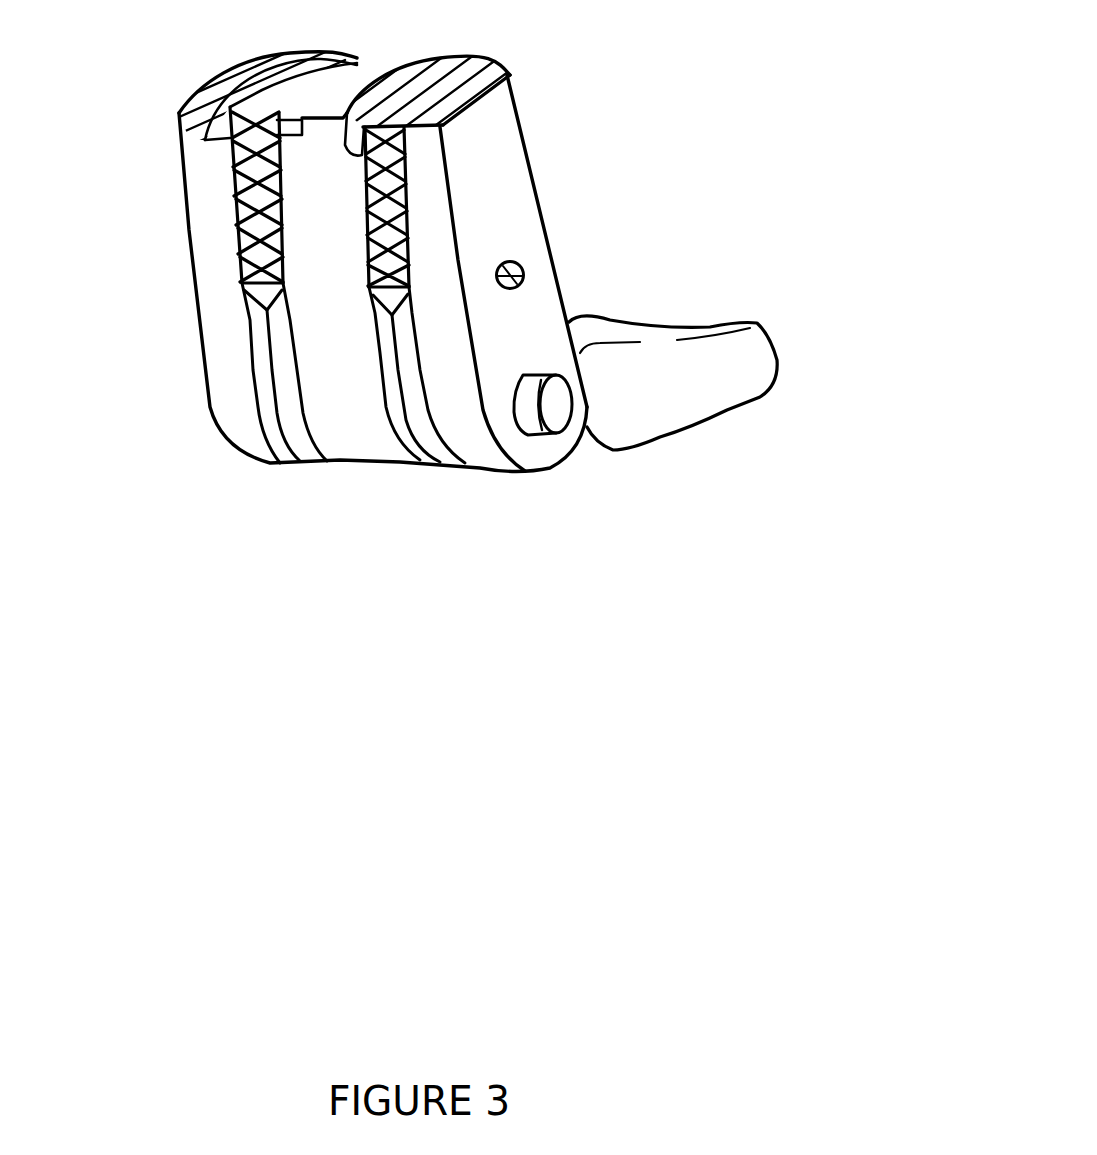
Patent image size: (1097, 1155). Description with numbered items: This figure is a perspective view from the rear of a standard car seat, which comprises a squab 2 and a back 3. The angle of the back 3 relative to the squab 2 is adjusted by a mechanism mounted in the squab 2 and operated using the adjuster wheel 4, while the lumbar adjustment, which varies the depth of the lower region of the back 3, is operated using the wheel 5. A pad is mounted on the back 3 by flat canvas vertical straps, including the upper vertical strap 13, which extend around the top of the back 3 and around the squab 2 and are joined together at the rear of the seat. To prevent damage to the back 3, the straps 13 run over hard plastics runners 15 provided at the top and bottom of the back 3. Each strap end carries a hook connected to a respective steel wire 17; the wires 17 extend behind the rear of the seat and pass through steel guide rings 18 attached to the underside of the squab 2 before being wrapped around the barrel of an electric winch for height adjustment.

The squab 2 is at (733, 358).
The back 3 is at (503, 337).
The adjuster wheel 4 is at (546, 405).
The wheel 5 is at (521, 265).
The upper vertical strap 13 is at (250, 191).
The hard plastics runners 15 is at (510, 80).
The steel wire 17 is at (265, 399).
The steel guide rings 18 is at (412, 289).